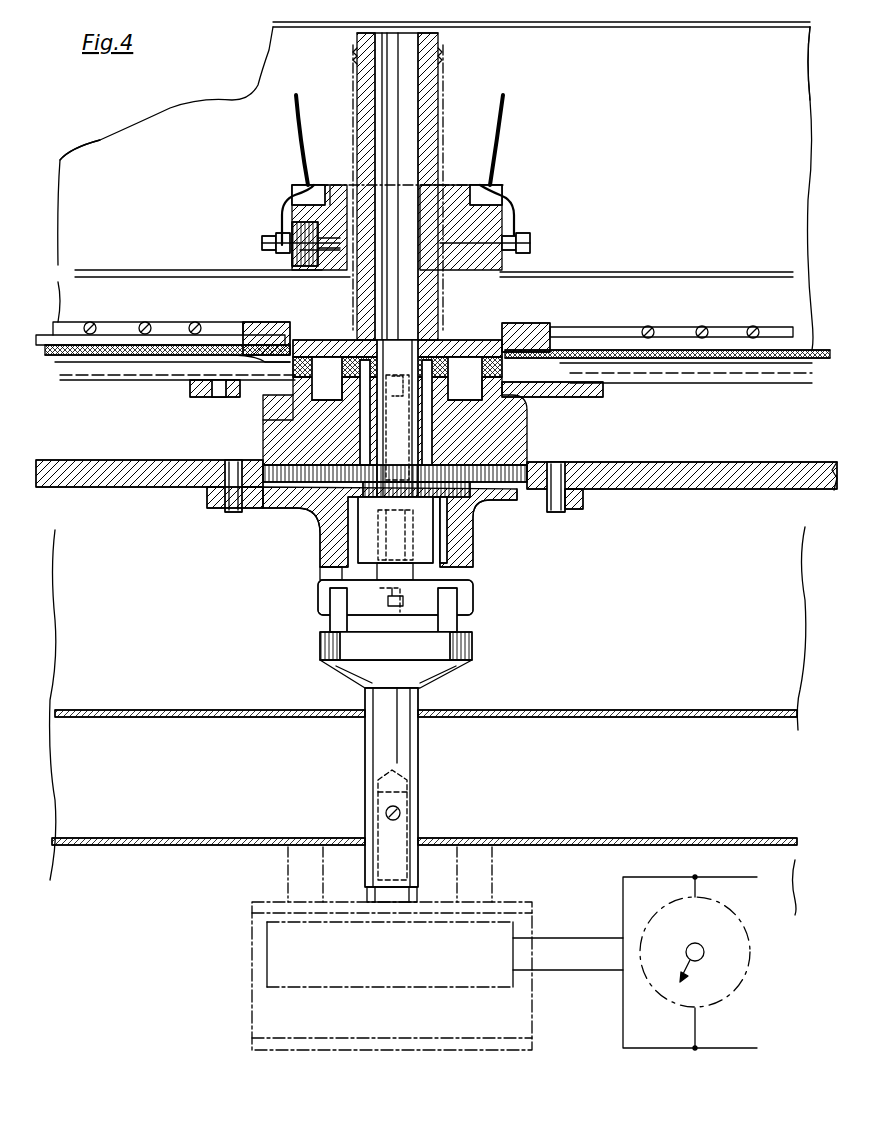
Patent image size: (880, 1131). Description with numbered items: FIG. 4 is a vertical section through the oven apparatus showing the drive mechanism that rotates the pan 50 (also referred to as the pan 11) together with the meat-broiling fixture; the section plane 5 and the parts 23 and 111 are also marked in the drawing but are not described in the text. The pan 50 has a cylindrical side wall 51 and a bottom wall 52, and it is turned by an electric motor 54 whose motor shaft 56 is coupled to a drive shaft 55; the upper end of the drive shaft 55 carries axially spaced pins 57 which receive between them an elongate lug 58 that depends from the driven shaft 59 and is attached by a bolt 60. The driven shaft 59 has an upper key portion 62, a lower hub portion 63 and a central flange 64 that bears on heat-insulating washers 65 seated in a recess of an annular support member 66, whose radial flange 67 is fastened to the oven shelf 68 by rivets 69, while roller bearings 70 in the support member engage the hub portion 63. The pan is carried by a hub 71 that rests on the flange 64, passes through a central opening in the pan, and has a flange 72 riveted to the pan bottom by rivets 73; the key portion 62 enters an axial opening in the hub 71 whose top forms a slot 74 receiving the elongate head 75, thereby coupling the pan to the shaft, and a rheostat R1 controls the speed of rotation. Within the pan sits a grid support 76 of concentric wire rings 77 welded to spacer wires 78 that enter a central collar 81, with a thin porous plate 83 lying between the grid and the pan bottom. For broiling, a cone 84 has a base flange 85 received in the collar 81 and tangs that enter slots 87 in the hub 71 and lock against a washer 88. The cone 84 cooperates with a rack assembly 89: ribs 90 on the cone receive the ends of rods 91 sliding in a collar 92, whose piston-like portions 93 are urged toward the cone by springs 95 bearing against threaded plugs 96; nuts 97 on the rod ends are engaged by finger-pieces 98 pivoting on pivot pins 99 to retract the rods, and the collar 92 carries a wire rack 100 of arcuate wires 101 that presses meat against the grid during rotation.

The plate with openings 5 is at (318, 355).
The pan 11 is at (108, 125).
The base plate 23 is at (634, 710).
The pan 50 is at (810, 100).
The cylindrical side wall 51 is at (541, 71).
The bottom wall 52 is at (736, 386).
The electric motor 54 is at (437, 948).
The drive shaft 55 is at (412, 742).
The motor shaft 56 is at (404, 828).
The pins 57 is at (330, 622).
The elongate lug 58 is at (475, 605).
The driven shaft 59 is at (322, 560).
The bolt 60 is at (396, 660).
The key portion 62 is at (434, 438).
The hub portion 63 is at (436, 540).
The flange 64 is at (278, 492).
The washers 65 is at (330, 515).
The annular support member 66 is at (475, 560).
The flange 67 is at (583, 505).
The oven shelf 68 is at (110, 488).
The rivets 69 is at (228, 512).
The roller bearings 70 is at (448, 520).
The hub 71 is at (399, 391).
The flange 72 is at (600, 400).
The rivets 73 is at (212, 398).
The slot 74 is at (393, 418).
The elongate head 75 is at (335, 405).
The grid support 76 is at (740, 326).
The wire rings 77 is at (702, 326).
The spacer wires 78 is at (397, 315).
The collar 81 is at (262, 322).
The plate 83 is at (145, 360).
The cone 84 is at (440, 44).
The base flange 85 is at (505, 345).
The slots 87 is at (290, 410).
The washer 88 is at (550, 340).
The rack assembly 89 is at (410, 181).
The ribs 90 is at (355, 62).
The rods 91 is at (262, 240).
The collar 92 is at (468, 185).
The piston-like portions 93 is at (320, 185).
The springs 95 is at (282, 225).
The plugs 96 is at (290, 252).
The nuts 97 is at (520, 182).
The finger-pieces 98 is at (296, 118).
The pivot pins 99 is at (300, 185).
The wire rack 100 is at (140, 268).
The arcuate wires 101 is at (718, 268).
The bore 111 is at (422, 80).
The rheostat R1 is at (750, 980).